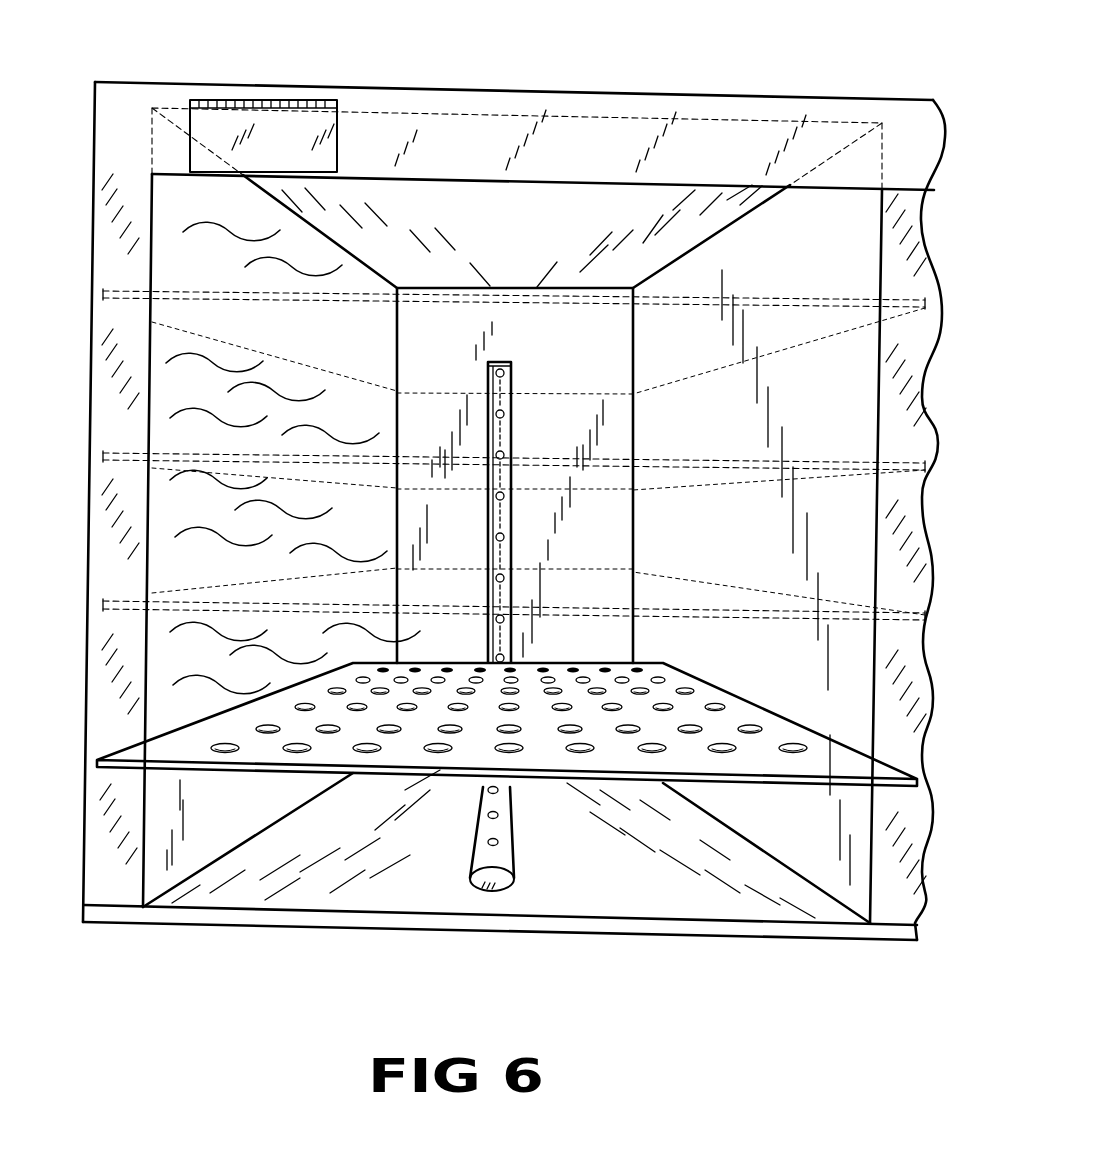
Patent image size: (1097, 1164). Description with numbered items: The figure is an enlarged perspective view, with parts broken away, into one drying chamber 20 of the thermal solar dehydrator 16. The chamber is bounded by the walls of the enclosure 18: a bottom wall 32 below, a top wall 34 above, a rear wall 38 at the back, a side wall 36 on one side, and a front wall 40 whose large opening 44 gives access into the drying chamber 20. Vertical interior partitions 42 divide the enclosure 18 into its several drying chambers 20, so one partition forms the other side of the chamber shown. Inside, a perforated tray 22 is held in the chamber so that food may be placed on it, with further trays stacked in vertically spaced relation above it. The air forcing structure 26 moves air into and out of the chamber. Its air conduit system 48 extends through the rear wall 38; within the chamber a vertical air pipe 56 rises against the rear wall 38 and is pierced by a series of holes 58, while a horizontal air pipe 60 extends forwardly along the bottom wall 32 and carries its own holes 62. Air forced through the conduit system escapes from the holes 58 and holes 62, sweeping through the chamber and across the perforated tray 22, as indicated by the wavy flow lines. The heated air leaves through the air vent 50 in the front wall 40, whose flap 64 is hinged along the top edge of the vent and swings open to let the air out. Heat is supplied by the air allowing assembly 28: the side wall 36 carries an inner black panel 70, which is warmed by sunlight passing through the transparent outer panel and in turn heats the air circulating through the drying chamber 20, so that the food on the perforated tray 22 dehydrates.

The thermal solar dehydrator 16 is at (787, 52).
The enclosure 18 is at (395, 76).
The drying chamber 20 is at (600, 356).
The perforated tray 22 is at (677, 683).
The air forcing structure 26 is at (476, 362).
The air allowing assembly 28 is at (321, 264).
The bottom wall 32 is at (307, 930).
The top wall 34 is at (495, 92).
The side wall 36 is at (258, 849).
The rear wall 38 is at (620, 430).
The front wall 40 is at (718, 108).
The vertical interior partition 42 is at (645, 523).
The large opening 44 is at (142, 870).
The air conduit system 48 is at (521, 871).
The air vent 50 is at (336, 154).
The vertical air pipe 56 is at (505, 647).
The holes 58 is at (494, 498).
The horizontal air pipe 60 is at (481, 828).
The holes 62 is at (505, 833).
The flap 64 is at (228, 117).
The inner black panel 70 is at (380, 403).